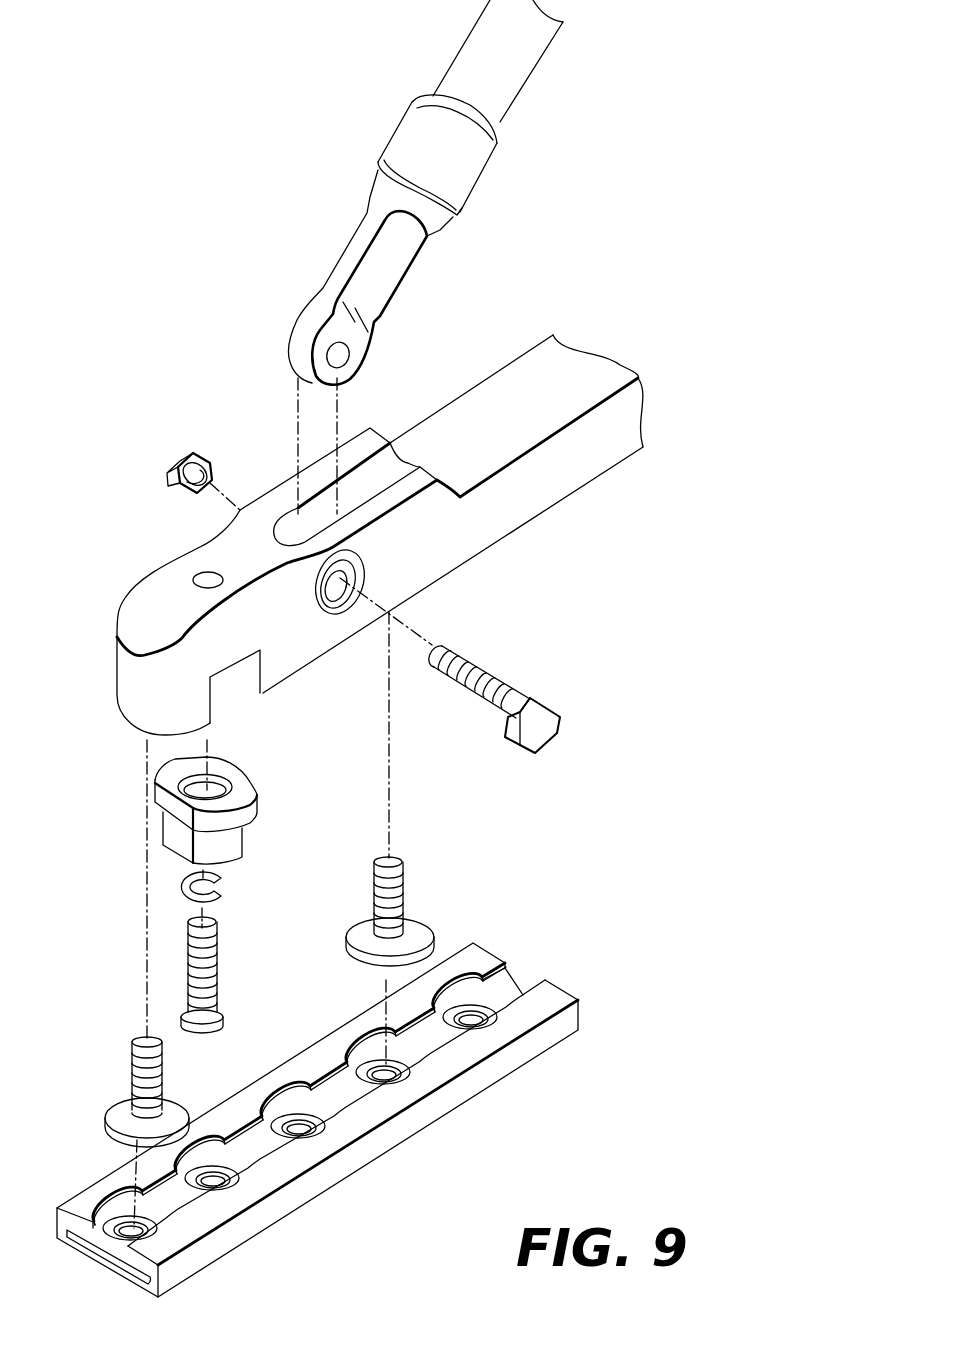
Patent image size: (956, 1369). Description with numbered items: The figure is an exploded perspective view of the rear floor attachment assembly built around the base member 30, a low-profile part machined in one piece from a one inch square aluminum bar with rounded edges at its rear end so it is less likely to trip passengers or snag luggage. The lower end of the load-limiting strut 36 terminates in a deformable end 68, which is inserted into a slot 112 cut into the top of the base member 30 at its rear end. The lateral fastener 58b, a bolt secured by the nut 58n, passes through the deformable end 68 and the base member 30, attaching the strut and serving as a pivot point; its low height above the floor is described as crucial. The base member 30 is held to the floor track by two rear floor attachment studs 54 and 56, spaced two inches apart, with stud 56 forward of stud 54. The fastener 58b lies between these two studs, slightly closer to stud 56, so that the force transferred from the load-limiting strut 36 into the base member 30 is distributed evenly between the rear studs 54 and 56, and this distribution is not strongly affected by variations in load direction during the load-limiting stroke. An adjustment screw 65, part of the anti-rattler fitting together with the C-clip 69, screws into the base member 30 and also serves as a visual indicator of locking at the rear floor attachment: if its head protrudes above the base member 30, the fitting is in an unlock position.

The load-limiting strut 36 is at (498, 69).
The deformable end 68 is at (390, 265).
The base member 30 is at (612, 446).
The slot 112 is at (392, 471).
The nut 58n is at (170, 460).
The lateral fastener 58b is at (541, 713).
The C-clip 69 is at (183, 888).
The attachment screw 65 is at (196, 968).
The rear floor attachment stud 56 is at (418, 932).
The rear floor attachment stud 54 is at (132, 1078).